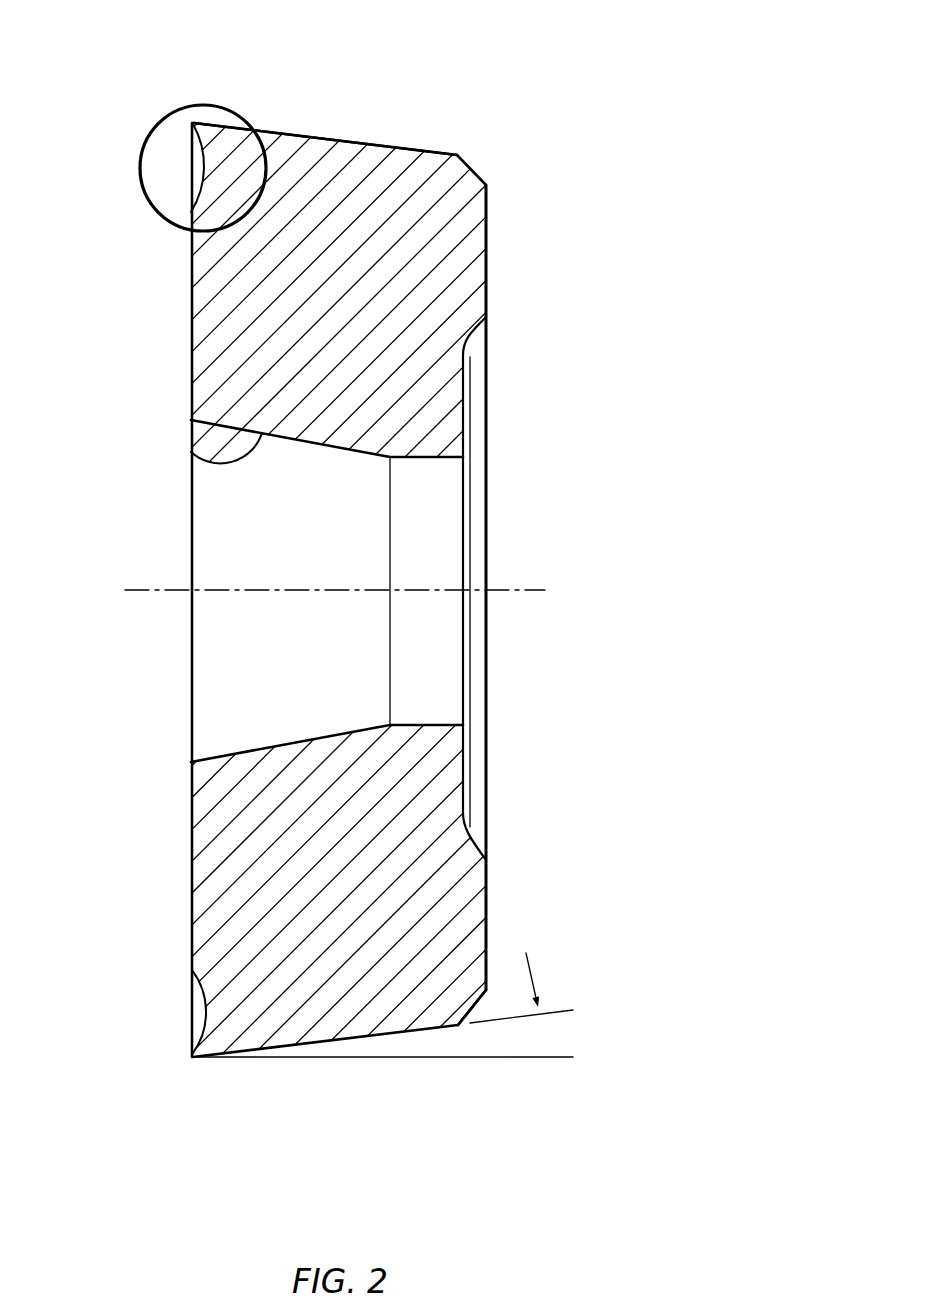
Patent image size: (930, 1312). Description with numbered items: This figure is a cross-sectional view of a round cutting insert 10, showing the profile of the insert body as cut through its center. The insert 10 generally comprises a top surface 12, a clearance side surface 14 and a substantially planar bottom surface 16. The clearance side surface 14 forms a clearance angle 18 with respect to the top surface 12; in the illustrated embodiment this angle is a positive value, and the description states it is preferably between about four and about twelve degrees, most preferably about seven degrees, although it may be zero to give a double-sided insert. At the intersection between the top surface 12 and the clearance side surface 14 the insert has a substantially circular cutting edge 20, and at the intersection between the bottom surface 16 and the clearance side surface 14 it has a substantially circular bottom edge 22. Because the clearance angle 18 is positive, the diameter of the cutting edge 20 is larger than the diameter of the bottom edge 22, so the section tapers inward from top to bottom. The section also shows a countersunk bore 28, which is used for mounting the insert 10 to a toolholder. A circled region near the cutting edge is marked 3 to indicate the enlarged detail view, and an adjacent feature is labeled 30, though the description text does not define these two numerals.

The detail view circle (FIG. 3) 3 is at (220, 103).
The round cutting insert 10 is at (588, 132).
The top surface 12 is at (174, 866).
The clearance side surface 14 is at (360, 125).
The bottom surface 16 is at (507, 867).
The clearance angle 18 is at (540, 1066).
The cutting edge 20 is at (193, 1057).
The bottom edge 22 is at (458, 1027).
The countersunk bore 28 is at (190, 452).
The top groove 30 is at (178, 179).